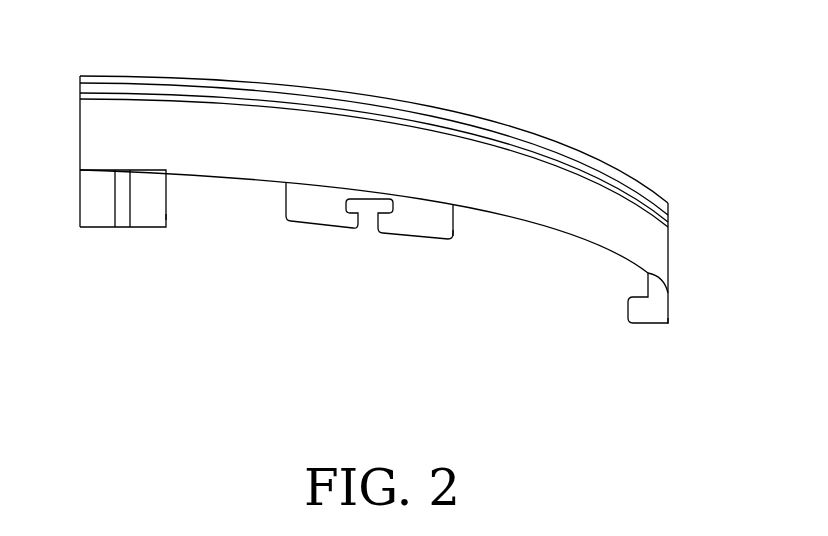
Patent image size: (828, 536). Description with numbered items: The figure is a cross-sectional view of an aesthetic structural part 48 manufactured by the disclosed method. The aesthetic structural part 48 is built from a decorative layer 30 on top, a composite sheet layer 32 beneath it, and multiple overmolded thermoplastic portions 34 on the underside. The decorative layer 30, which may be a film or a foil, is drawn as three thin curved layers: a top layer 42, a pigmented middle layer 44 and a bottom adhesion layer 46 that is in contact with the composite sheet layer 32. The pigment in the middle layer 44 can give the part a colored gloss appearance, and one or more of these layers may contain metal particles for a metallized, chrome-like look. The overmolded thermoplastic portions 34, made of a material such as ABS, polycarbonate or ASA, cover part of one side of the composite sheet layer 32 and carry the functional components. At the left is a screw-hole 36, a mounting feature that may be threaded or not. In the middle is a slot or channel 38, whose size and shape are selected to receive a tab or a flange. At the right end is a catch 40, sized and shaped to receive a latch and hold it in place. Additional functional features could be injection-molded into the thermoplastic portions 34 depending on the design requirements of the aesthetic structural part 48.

The decorative layer 30 is at (349, 123).
The composite sheet layer 32 is at (690, 228).
The overmolded thermoplastic portions 34 is at (166, 213).
The screw-hole 36 is at (122, 230).
The slot or channel 38 is at (370, 235).
The catch 40 is at (626, 293).
The top layer 42 is at (225, 80).
The pigmented middle layer 44 is at (268, 91).
The bottom adhesion layer 46 is at (323, 104).
The aesthetic structural part 48 is at (668, 377).